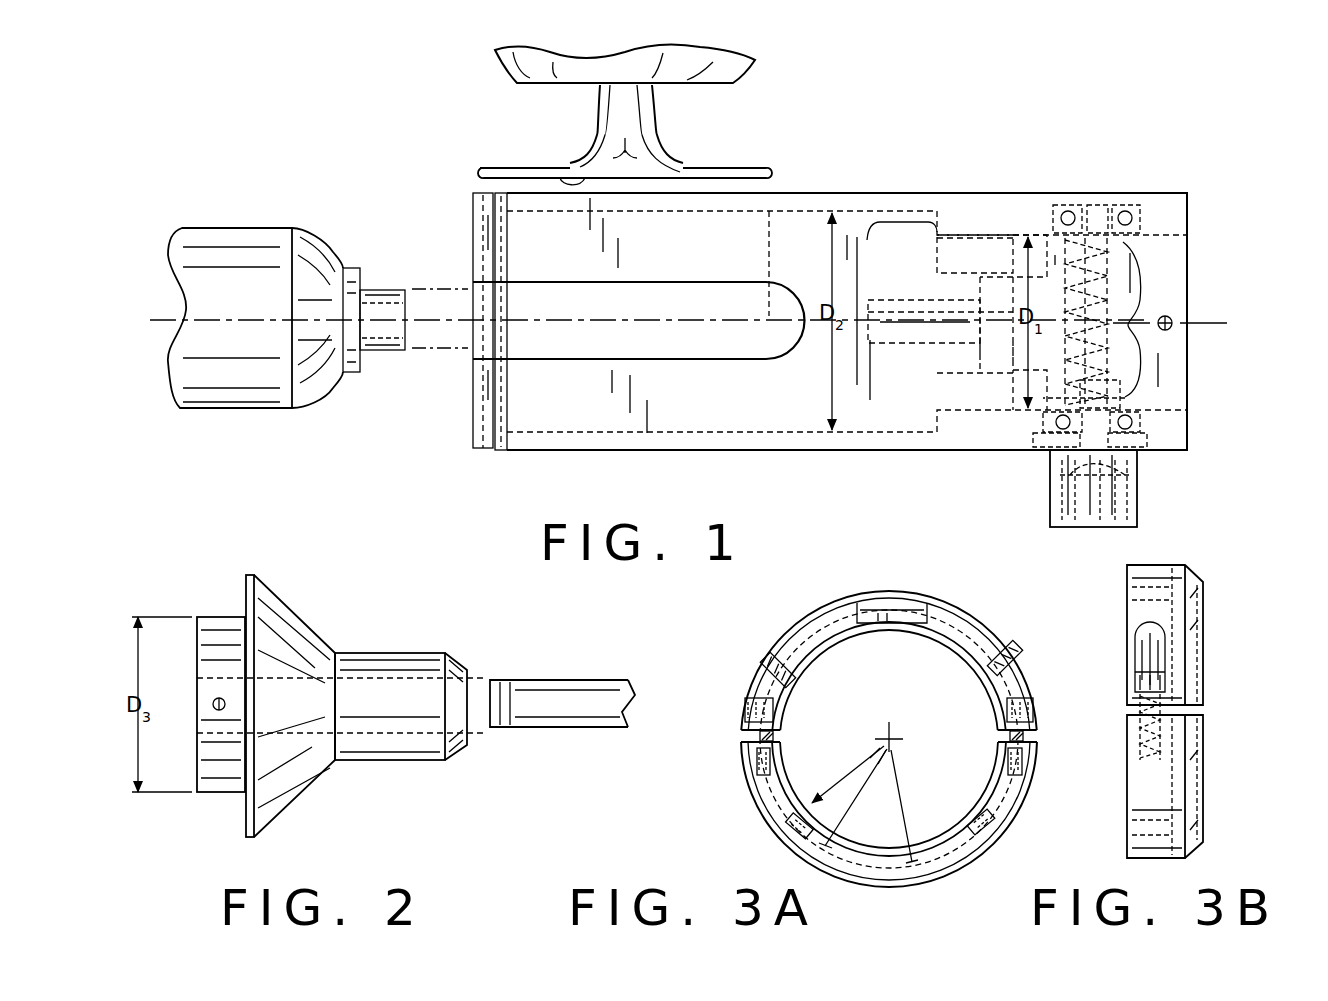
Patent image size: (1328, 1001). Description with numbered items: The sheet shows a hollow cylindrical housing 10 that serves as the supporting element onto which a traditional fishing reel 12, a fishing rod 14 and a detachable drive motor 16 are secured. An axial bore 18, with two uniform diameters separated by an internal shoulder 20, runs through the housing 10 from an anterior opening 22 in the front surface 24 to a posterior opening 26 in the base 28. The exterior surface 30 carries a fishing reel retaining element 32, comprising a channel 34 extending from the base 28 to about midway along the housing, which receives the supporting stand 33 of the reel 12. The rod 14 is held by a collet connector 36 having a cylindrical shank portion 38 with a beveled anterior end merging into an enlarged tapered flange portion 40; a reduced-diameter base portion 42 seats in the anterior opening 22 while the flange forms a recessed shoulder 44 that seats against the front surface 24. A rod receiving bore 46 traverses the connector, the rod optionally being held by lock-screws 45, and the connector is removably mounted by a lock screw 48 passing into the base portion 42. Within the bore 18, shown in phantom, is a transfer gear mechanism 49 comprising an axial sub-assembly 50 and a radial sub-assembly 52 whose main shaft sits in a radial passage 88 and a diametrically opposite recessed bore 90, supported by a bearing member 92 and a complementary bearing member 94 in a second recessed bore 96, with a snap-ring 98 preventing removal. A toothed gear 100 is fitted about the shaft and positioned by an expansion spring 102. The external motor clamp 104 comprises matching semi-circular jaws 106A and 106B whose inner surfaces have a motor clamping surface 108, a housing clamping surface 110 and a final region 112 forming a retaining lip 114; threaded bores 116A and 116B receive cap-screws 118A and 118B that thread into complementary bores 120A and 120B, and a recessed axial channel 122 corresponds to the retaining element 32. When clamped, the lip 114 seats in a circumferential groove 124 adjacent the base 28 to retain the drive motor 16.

In FIG. 1, the hollow cylindrical housing 10 is at (836, 178).
In FIG. 1, the fishing reel 12 is at (690, 130).
In FIG. 2, the fishing rod 14 is at (547, 678).
In FIG. 1, the drive motor 16 is at (283, 222).
In FIG. 1, the axial bore 18 is at (680, 245).
In FIG. 1, the internal shoulder 20 is at (934, 215).
In FIG. 1, the anterior opening 22 is at (1191, 250).
In FIG. 1, the front surface 24 is at (1191, 195).
In FIG. 1, the posterior opening 26 is at (470, 390).
In FIG. 1, the base 28 is at (470, 208).
In FIG. 1, the exterior surface 30 is at (676, 436).
In FIG. 1, the fishing reel retaining element 32 is at (668, 322).
In FIG. 1, the supporting stand 33 is at (562, 182).
In FIG. 1, the channel 34 is at (752, 362).
In FIG. 2, the collet connector 36 is at (373, 648).
In FIG. 2, the cylindrical shank portion 38 is at (432, 672).
In FIG. 2, the tapered flange portion 40 is at (293, 633).
In FIG. 2, the base portion 42 is at (217, 614).
In FIG. 2, the recessed shoulder 44 is at (243, 800).
In FIG. 2, the lock-screw 45 is at (212, 704).
In FIG. 2, the rod receiving bore 46 is at (445, 705).
In FIG. 1, the lock screw 48 is at (1175, 325).
In FIG. 1, the transfer gear mechanism 49 is at (930, 360).
In FIG. 1, the axial sub-assembly 50 is at (1053, 232).
In FIG. 1, the radial sub-assembly 52 is at (1140, 323).
In FIG. 1, the radial passage 88 is at (1075, 442).
In FIG. 1, the recessed bore 90 is at (1134, 218).
In FIG. 1, the bearing member 92 is at (1060, 214).
In FIG. 1, the bearing member 94 is at (1062, 425).
In FIG. 1, the second recessed bore 96 is at (1050, 418).
In FIG. 1, the snap-ring 98 is at (1147, 438).
In FIG. 1, the toothed gear 100 is at (1125, 398).
In FIG. 1, the expansion spring 102 is at (1113, 297).
In FIG. 3A, the external motor clamp 104 is at (866, 717).
In FIG. 3B, the external motor clamp 104 is at (1167, 684).
In FIG. 3A, the semi-circular jaw 106A is at (953, 655).
In FIG. 3A, the semi-circular jaw 106B is at (952, 815).
In FIG. 3B, the motor clamping surface 108 is at (1152, 812).
In FIG. 3B, the housing clamping surface 110 is at (1177, 820).
In FIG. 3B, the final region 112 is at (1188, 827).
In FIG. 3B, the retaining lip 114 is at (1200, 835).
In FIG. 3A, the threaded bore 116A is at (770, 660).
In FIG. 3A, the threaded bore 116B is at (983, 655).
In FIG. 3B, the threaded bore 116B is at (1155, 647).
In FIG. 3A, the cap-screw 118A is at (748, 706).
In FIG. 3A, the cap-screw 118B is at (1000, 766).
In FIG. 3B, the cap-screw 118B is at (1165, 682).
In FIG. 3A, the threaded bore 120A is at (772, 752).
In FIG. 3A, the threaded bore 120B is at (1003, 749).
In FIG. 3A, the recessed axial channel 122 is at (914, 608).
In FIG. 1, the circumferential groove 124 is at (502, 452).